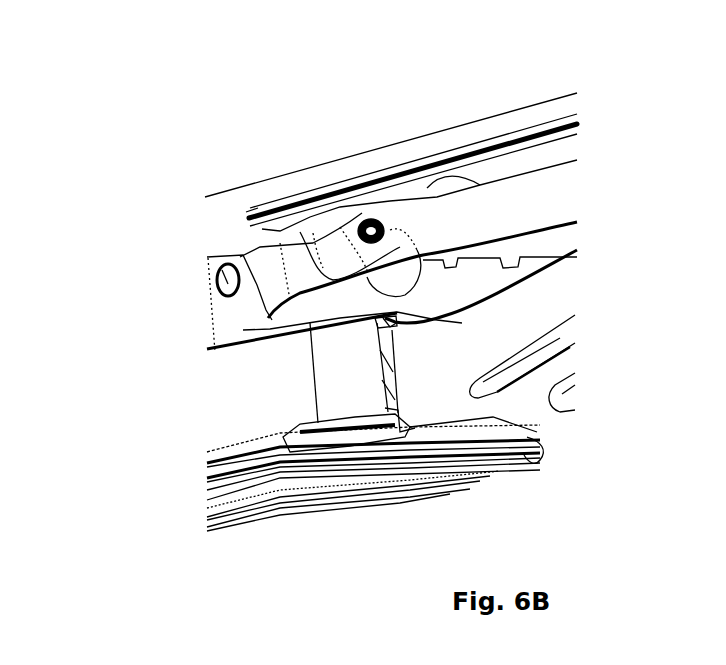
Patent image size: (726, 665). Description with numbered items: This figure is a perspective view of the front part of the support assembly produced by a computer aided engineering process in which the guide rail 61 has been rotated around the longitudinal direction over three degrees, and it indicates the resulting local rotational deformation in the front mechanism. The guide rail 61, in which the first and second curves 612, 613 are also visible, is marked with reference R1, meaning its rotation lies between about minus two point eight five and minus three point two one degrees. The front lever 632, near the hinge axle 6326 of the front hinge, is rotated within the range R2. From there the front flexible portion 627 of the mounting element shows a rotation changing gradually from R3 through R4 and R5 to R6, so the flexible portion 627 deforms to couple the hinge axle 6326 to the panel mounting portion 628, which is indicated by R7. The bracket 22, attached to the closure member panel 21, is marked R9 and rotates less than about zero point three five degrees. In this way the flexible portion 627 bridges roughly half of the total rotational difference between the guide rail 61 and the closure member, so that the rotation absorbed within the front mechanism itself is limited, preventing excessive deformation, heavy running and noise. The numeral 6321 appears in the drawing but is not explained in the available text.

The fixing portion 6321 is at (133, 6).
The flexible portion 627 is at (250, 240).
The hinge axle 6326 is at (227, 278).
The rotation range R3 is at (268, 272).
The rotation range R4 is at (304, 250).
The rotation range R5 is at (338, 248).
The rotation range R6 is at (390, 250).
The rotation range R7 is at (437, 217).
The rotation range R9 is at (480, 173).
The closure member panel 21 is at (510, 127).
The bracket 22 is at (568, 151).
The panel mounting portion 628 is at (567, 206).
The front lever 632 is at (464, 299).
The rotation range R2 is at (240, 320).
The rotation range R1 is at (260, 377).
The guide rail 61 is at (223, 432).
The second curve 613 is at (493, 385).
The first curve 612 is at (573, 405).